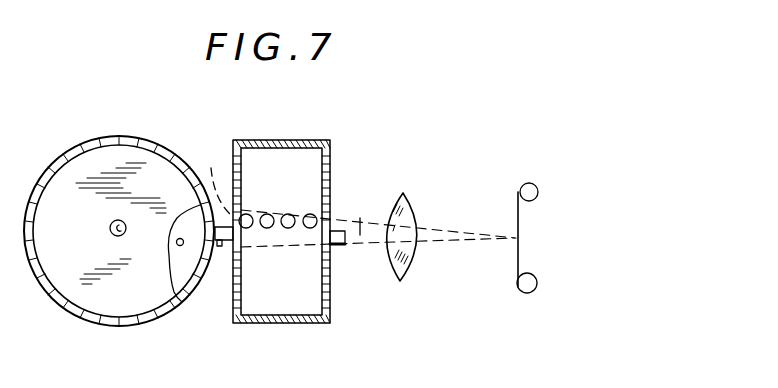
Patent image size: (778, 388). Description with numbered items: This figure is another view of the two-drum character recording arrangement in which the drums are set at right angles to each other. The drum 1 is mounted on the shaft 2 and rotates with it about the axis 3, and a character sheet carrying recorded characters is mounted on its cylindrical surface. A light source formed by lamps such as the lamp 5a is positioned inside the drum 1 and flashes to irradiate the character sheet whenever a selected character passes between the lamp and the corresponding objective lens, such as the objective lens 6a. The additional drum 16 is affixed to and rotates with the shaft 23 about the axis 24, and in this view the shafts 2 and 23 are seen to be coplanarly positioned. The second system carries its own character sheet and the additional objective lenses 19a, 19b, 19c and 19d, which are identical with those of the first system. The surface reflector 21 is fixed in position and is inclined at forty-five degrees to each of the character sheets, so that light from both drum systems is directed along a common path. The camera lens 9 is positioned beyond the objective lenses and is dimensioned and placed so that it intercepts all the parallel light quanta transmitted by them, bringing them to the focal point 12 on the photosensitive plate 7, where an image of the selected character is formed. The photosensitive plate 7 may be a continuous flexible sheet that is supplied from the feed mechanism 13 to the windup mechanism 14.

The drum 1 is at (78, 317).
The shaft 2 is at (119, 222).
The axis 3 is at (110, 230).
The lamp 5a is at (177, 243).
The objective lens 6a is at (223, 250).
The photosensitive plate 7 is at (583, 210).
The camera lens 9 is at (400, 278).
The focal point 12 is at (517, 238).
The feed mechanism 13 is at (537, 282).
The windup mechanism 14 is at (537, 197).
The additional drum 16 is at (318, 162).
The additional objective lens 19a is at (310, 228).
The additional objective lens 19b is at (289, 214).
The additional objective lens 19c is at (267, 228).
The additional objective lens 19d is at (249, 214).
The surface reflector 21 is at (214, 180).
The shaft 23 is at (343, 248).
The axis 24 is at (354, 213).